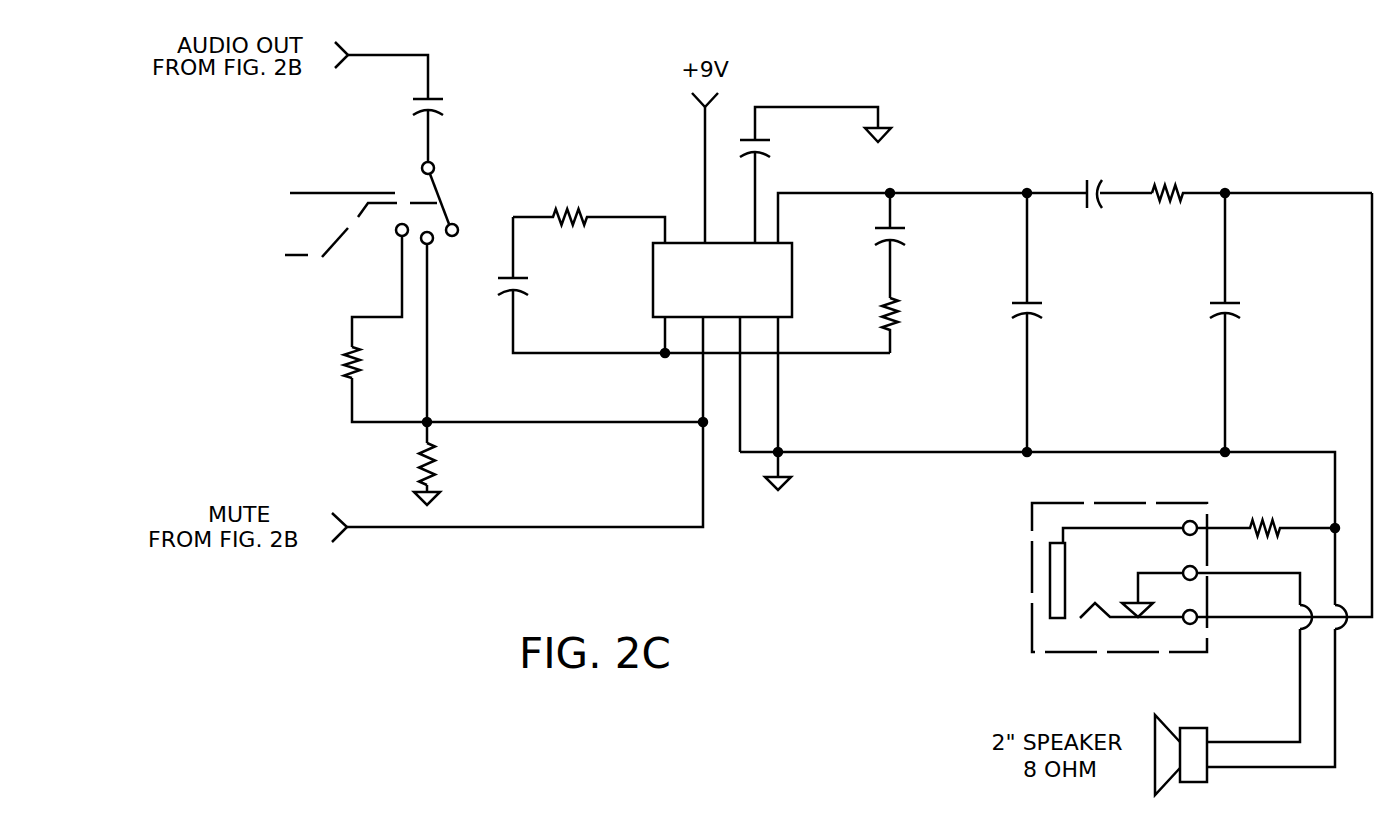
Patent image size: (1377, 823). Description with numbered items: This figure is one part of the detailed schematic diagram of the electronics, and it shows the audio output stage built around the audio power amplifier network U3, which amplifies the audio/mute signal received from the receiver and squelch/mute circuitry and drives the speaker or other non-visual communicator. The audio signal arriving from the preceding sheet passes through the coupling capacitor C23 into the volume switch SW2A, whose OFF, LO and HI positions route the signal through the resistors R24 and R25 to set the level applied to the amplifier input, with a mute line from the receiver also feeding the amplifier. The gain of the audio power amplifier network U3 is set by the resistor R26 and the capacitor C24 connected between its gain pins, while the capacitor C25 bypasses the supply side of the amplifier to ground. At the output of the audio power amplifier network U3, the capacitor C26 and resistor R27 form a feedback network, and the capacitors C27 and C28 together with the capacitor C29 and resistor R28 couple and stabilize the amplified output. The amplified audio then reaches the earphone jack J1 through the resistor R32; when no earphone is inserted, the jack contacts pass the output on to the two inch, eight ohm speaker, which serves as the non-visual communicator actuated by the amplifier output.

The 0.1 uF coupling capacitor C23 is at (454, 120).
The volume switch section A (OFF/LO/HI) SW2A is at (276, 222).
The 20K resistor R24 is at (377, 367).
The 5.1K resistor R25 is at (454, 464).
The 1K gain resistor R26 is at (589, 220).
The 10uF/10V gain capacitor C24 is at (566, 288).
The audio power amplifier network U3 is at (724, 336).
The 4.7uF/10V bypass capacitor C25 is at (810, 175).
The 2200pF capacitor C26 is at (935, 245).
The 15K resistor R27 is at (917, 321).
The 0.022 uF capacitor C27 is at (1062, 322).
The 100uF/10V output coupling capacitor C29 is at (1107, 205).
The 3.3 ohm resistor R28 is at (1262, 197).
The 22uF/16V capacitor C28 is at (1251, 322).
The earphone jack J1 is at (1094, 622).
The 10 ohm resistor R32 is at (1268, 529).